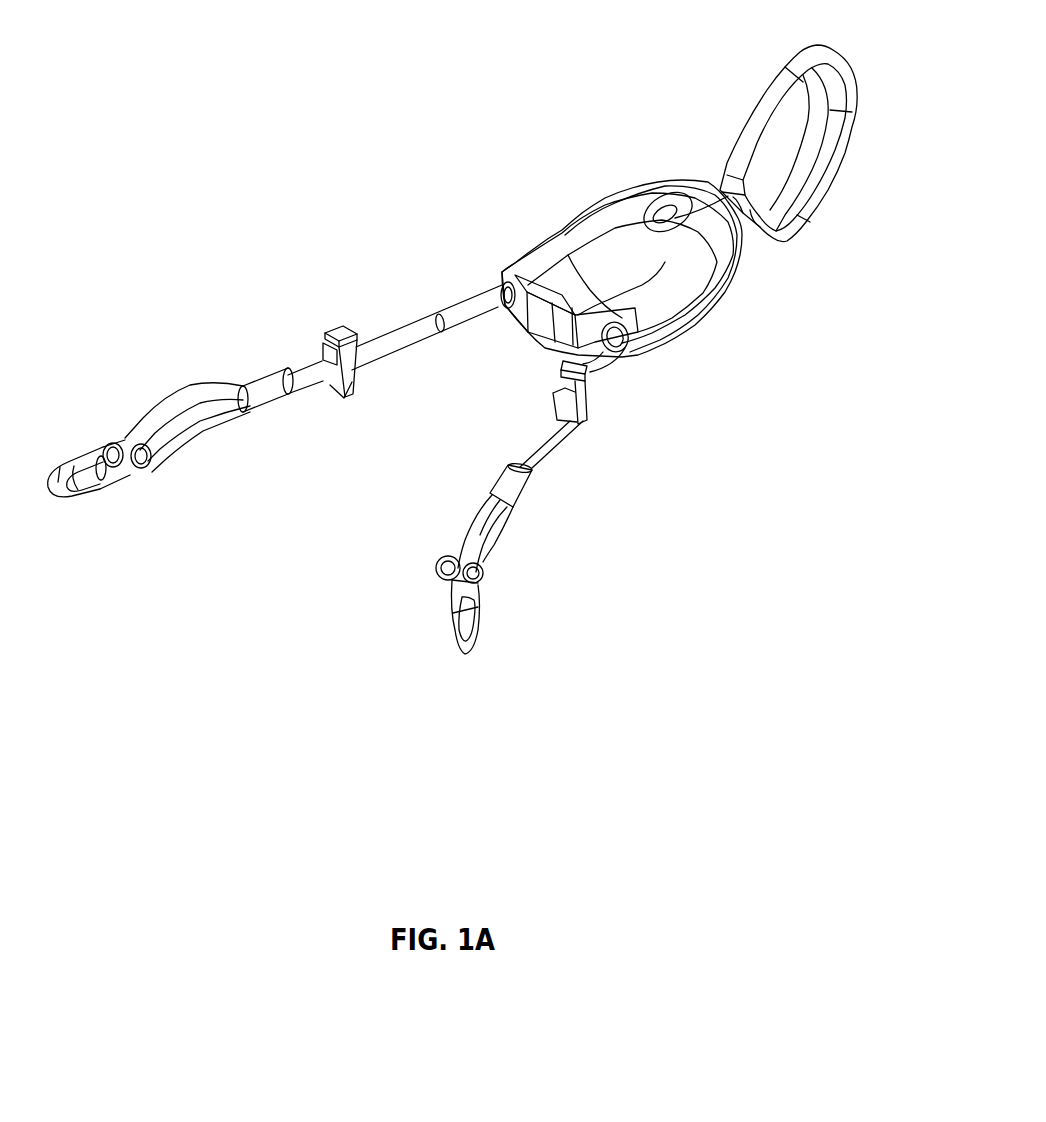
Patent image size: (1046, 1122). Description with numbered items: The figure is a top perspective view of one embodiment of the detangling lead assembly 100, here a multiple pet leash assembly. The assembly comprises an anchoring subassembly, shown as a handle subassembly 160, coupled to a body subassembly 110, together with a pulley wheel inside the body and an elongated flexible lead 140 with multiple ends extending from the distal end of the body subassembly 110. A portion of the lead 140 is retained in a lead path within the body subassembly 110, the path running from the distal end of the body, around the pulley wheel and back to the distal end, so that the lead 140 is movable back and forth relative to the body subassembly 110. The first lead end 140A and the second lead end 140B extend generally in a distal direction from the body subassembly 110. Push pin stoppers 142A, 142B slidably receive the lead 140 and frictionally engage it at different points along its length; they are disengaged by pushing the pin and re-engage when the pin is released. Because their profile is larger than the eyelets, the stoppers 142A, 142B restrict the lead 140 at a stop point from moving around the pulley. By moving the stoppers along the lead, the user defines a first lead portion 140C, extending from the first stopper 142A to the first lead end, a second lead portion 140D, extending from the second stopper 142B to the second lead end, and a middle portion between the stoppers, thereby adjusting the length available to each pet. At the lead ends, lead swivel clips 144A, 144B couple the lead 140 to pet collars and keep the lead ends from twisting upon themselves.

The detangling lead assembly 100 is at (285, 156).
The body subassembly 110 is at (763, 259).
The lead 140 is at (402, 330).
The first lead end 140A is at (633, 378).
The second lead end 140B is at (92, 543).
The first lead portion 140C is at (488, 650).
The second lead portion 140D is at (338, 398).
The first push pin stopper 142A is at (560, 391).
The second push pin stopper 142B is at (323, 338).
The first lead swivel clip 144A is at (453, 625).
The second lead swivel clip 144B is at (98, 447).
The handle subassembly 160 is at (845, 23).